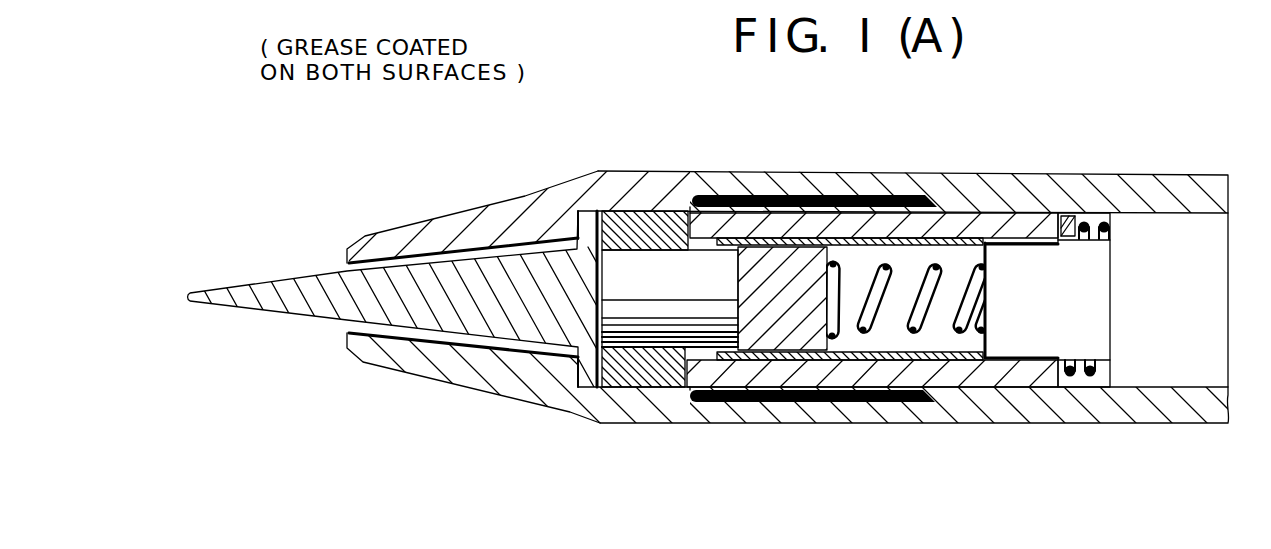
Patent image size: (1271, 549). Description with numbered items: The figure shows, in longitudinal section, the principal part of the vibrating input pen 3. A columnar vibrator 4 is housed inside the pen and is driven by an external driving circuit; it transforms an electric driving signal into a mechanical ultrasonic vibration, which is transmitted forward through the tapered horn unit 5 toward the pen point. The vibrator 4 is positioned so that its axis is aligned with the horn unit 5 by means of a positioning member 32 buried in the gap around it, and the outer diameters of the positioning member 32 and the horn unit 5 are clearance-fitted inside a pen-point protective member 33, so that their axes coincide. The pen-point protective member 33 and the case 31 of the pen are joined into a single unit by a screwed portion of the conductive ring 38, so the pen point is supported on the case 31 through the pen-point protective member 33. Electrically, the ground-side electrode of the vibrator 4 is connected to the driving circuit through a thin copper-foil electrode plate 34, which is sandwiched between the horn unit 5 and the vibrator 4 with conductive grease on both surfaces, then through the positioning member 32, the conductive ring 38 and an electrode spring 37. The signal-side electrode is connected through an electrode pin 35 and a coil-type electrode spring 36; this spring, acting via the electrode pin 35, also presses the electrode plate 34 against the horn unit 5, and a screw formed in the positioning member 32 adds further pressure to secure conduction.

The vibrating input pen 3 is at (606, 139).
The vibrator 4 is at (663, 272).
The horn unit 5 is at (323, 311).
The case 31 is at (945, 188).
The positioning member 32 is at (625, 212).
The pen-point protective member 33 is at (509, 382).
The electrode plate 34 is at (572, 222).
The electrode pin 35 is at (780, 262).
The electrode spring 36 is at (958, 336).
The electrode spring 37 is at (1093, 218).
The conductive ring 38 is at (988, 222).